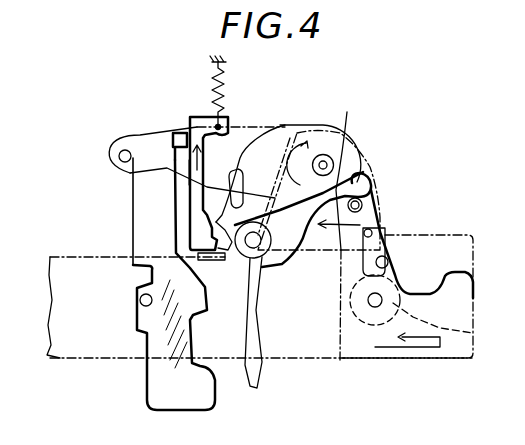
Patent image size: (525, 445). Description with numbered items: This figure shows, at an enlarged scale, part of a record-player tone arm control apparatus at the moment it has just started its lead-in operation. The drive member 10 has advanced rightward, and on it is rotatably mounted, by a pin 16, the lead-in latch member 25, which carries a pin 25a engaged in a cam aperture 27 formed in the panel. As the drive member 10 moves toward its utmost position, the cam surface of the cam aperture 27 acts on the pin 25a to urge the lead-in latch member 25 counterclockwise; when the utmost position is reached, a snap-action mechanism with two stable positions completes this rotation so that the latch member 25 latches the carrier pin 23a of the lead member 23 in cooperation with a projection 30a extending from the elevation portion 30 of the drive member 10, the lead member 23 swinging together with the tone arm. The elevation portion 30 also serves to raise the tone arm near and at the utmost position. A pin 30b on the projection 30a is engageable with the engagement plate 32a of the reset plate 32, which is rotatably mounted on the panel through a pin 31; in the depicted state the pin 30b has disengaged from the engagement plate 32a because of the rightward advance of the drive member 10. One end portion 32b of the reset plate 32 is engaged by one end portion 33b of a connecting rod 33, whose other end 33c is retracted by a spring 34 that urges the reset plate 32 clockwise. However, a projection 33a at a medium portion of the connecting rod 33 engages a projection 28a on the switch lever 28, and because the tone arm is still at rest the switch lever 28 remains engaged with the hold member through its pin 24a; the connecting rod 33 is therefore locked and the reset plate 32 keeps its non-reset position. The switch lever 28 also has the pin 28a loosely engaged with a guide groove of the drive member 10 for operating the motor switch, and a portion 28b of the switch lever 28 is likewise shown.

The drive member 10 is at (68, 256).
The pin 16 is at (377, 307).
The lead member 23 is at (372, 162).
The carrier pin 23a is at (383, 230).
The pin 24a is at (115, 150).
The lead-in latch member 25 is at (470, 332).
The pin 25a is at (388, 260).
The cam aperture 27 is at (295, 324).
The switch lever 28 is at (147, 395).
The pin 28a is at (141, 306).
The hook 28b is at (176, 132).
The elevation portion 30 is at (462, 302).
The projection 30a is at (358, 218).
The pin 30b is at (350, 170).
The pin 31 is at (250, 258).
The reset plate 32 is at (302, 225).
The engagement plate 32a is at (250, 138).
The end portion 32b is at (216, 222).
The connecting rod 33 is at (199, 118).
The projection 33a is at (197, 173).
The end portion 33b is at (190, 248).
The other end 33c is at (228, 115).
The spring 34 is at (224, 85).